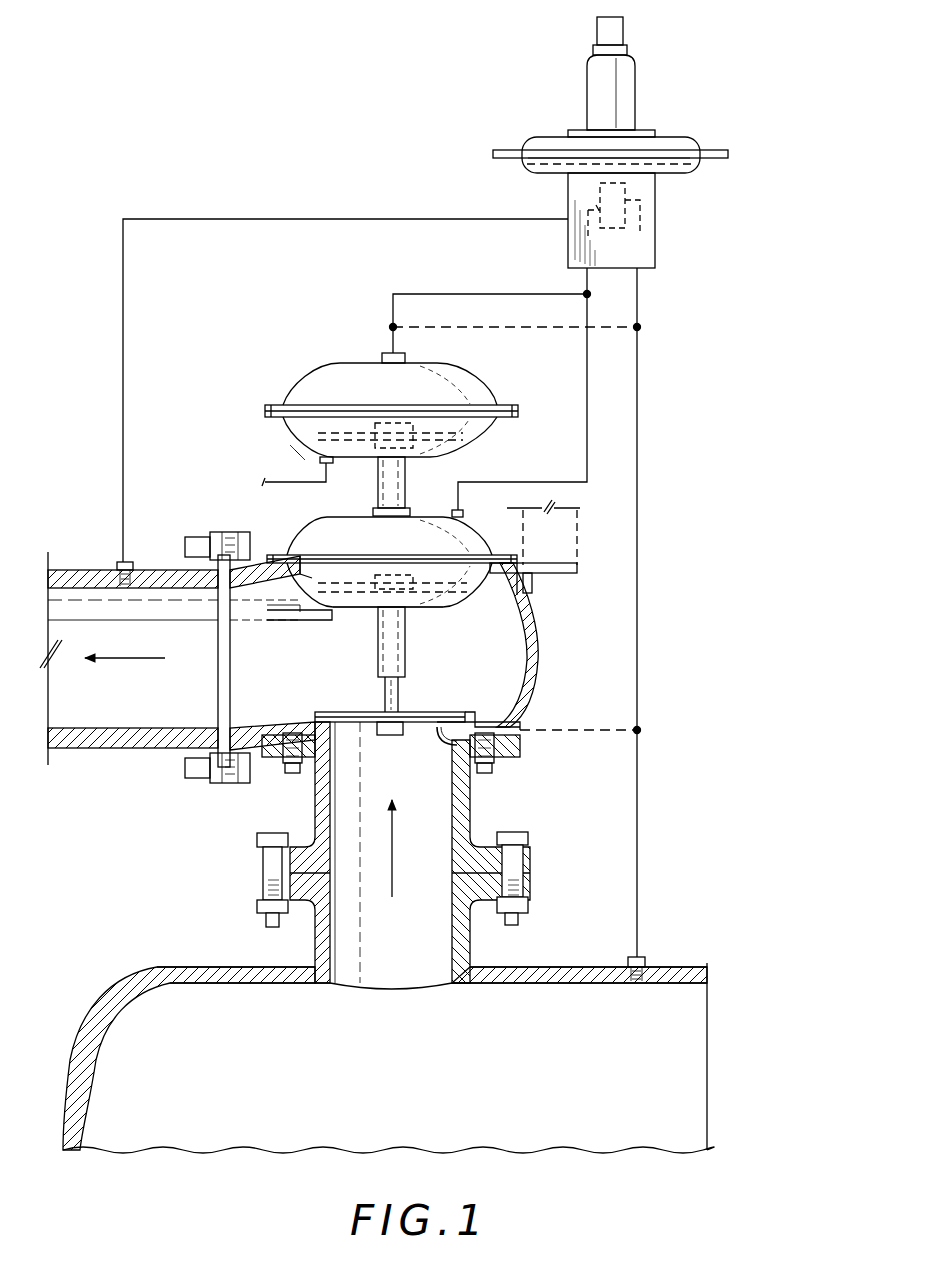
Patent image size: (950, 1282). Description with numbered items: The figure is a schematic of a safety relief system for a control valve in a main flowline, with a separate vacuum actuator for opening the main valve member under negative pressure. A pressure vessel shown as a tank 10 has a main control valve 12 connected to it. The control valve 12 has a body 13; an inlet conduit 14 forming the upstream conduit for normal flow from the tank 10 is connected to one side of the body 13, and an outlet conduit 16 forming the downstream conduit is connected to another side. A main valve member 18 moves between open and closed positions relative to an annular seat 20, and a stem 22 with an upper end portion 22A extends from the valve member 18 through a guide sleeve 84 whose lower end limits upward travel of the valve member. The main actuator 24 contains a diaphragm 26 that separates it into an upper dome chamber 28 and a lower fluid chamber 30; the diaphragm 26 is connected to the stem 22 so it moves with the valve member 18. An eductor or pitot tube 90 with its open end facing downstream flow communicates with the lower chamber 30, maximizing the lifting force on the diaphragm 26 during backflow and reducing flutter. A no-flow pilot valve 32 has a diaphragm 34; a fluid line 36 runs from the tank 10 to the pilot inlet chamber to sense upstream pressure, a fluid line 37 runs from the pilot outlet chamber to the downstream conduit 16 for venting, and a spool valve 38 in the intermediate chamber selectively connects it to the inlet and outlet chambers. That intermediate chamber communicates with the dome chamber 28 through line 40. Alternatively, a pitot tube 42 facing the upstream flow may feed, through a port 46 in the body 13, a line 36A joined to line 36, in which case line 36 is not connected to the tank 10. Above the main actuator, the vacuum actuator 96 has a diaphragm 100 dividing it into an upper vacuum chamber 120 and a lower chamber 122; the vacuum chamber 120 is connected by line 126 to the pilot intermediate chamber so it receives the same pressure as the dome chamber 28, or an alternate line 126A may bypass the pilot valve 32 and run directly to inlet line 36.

The tank 10 is at (156, 964).
The main control valve 12 is at (537, 617).
The body 13 is at (539, 678).
The inlet conduit 14 is at (381, 855).
The outlet conduit 16 is at (117, 757).
The main valve member 18 is at (432, 706).
The annular seat 20 is at (316, 712).
The stem 22 is at (385, 691).
The upper end portion 22A is at (389, 532).
The main actuator 24 is at (386, 569).
The diaphragm 26 is at (466, 592).
The upper fluid chamber or dome 28 is at (318, 540).
The lower fluid chamber 30 is at (365, 598).
The pilot valve 32 is at (568, 100).
The diaphragm 34 is at (673, 165).
The fluid line 36 is at (640, 601).
The line 36A is at (548, 735).
The fluid line 37 is at (316, 218).
The spool valve 38 is at (632, 216).
The line 40 is at (583, 397).
The pitot tube 42 is at (440, 740).
The port 46 is at (496, 745).
The guide sleeve 84 is at (407, 650).
The eductor or pitot tube 90 is at (308, 624).
The vacuum actuator 96 is at (385, 396).
The diaphragm 100 is at (313, 458).
The upper fluid chamber 120 is at (316, 400).
The lower fluid chamber 122 is at (480, 457).
The line 126 is at (500, 293).
The alternate line 126A is at (480, 329).